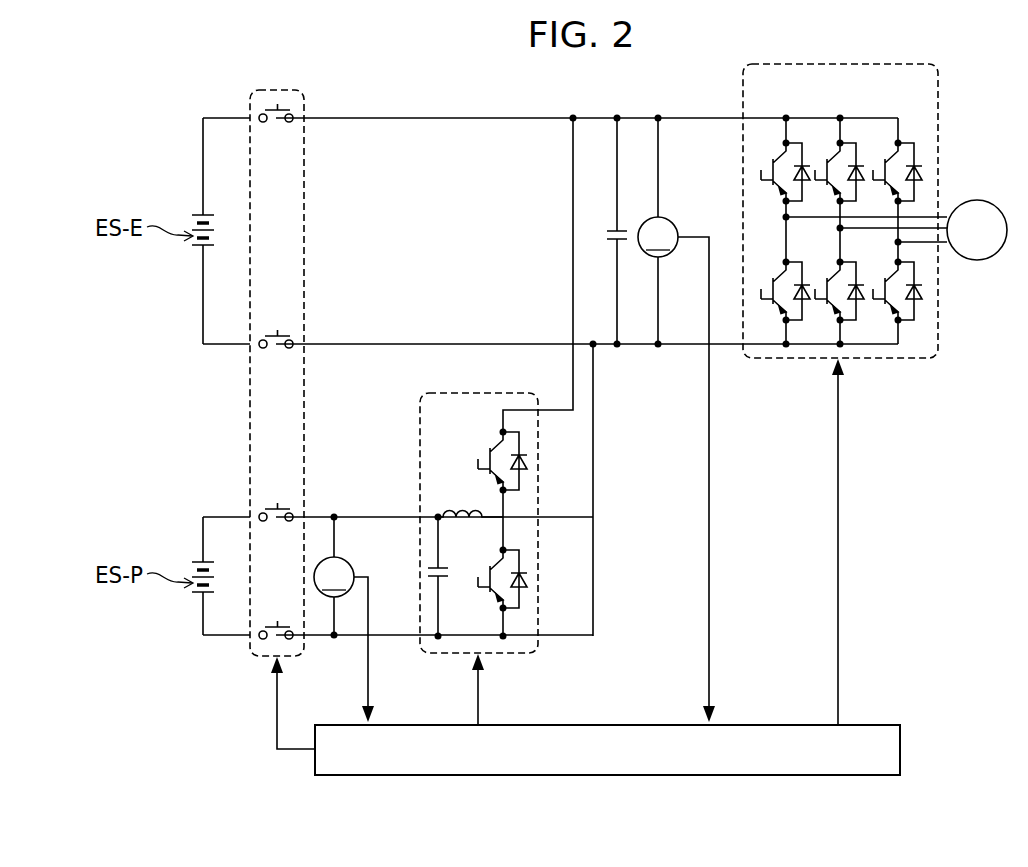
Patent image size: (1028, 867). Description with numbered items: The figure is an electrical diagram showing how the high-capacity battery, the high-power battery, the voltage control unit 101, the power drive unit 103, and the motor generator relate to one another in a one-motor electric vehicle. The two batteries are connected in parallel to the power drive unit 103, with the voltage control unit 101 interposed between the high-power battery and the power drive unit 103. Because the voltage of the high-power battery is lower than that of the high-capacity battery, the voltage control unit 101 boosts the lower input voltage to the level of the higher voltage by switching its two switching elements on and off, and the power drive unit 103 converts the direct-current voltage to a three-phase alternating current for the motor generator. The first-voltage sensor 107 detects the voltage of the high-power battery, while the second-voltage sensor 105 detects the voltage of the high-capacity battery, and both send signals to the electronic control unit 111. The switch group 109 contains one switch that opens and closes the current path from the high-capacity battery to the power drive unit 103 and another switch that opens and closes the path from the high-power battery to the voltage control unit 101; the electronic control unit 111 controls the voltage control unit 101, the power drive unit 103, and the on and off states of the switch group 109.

The voltage control unit (VCU) 101 is at (420, 432).
The power drive unit (PDU) 103 is at (938, 139).
The V2 sensor 105 is at (672, 222).
The V1 sensor 107 is at (348, 565).
The switch group 109 is at (249, 421).
The electronic control unit (ECU) 111 is at (900, 750).